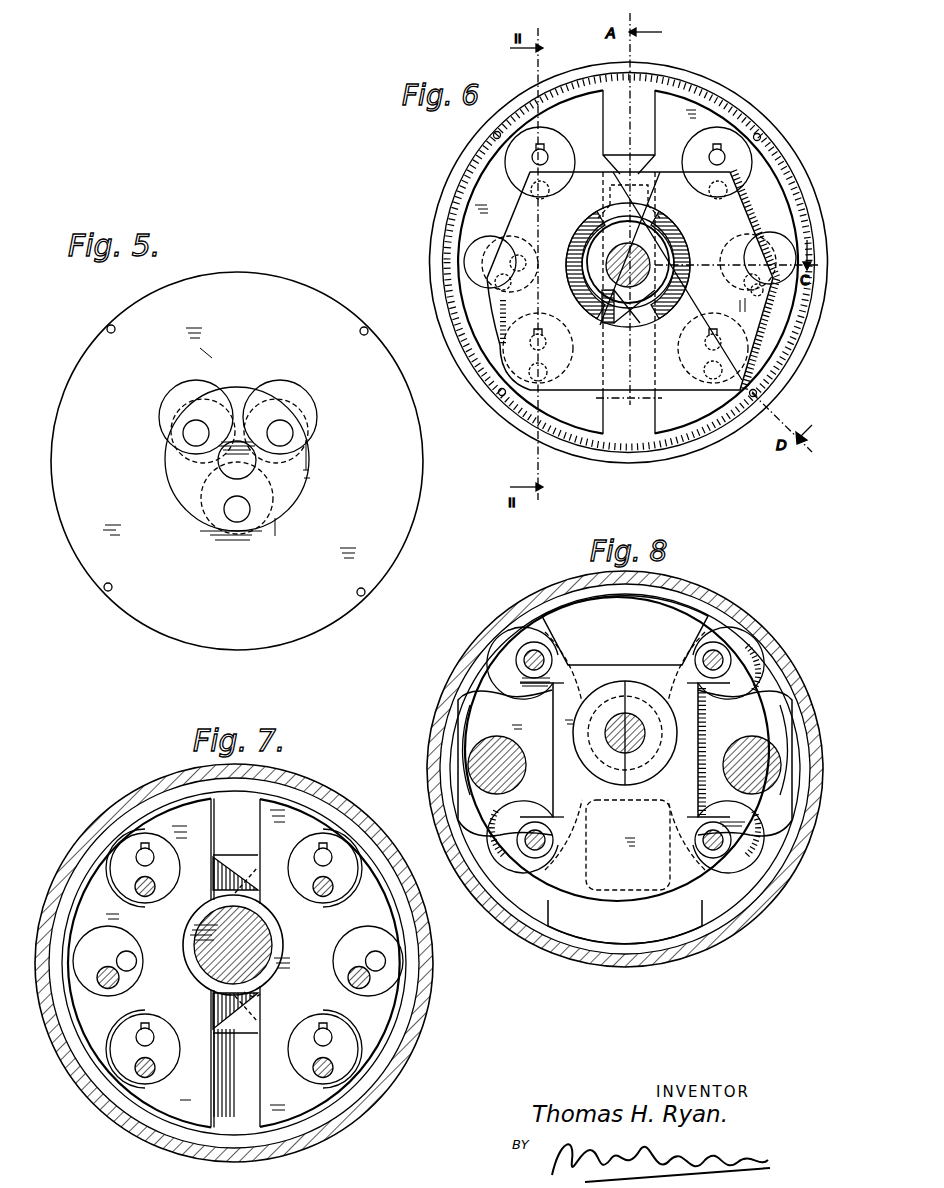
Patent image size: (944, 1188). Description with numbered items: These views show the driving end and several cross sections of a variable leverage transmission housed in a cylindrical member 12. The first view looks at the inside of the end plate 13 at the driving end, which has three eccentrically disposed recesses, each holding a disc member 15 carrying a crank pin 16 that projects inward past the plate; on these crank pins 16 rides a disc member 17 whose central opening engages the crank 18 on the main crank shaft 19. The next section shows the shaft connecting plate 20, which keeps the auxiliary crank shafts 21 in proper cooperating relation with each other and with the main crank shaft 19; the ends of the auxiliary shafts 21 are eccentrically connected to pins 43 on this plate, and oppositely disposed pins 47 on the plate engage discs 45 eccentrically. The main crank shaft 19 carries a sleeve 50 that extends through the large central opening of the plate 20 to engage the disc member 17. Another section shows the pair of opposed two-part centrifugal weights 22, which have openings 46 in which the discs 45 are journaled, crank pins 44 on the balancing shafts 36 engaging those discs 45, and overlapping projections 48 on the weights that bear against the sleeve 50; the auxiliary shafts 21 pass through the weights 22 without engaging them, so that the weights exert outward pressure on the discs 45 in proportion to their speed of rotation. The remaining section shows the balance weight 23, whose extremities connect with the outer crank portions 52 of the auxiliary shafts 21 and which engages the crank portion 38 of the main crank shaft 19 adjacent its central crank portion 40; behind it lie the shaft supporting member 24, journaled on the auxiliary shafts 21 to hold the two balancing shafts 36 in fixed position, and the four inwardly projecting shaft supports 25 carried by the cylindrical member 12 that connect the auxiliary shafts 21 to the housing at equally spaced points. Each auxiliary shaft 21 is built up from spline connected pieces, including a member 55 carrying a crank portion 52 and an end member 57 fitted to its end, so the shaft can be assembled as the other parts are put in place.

In FIG. 6, the cylindrical member 12 is at (747, 108).
In FIG. 7, the cylindrical member 12 is at (343, 798).
In FIG. 8, the cylindrical member 12 is at (755, 621).
In FIG. 5, the end plate 13 is at (315, 305).
In FIG. 5, the disc member 15 is at (273, 383).
In FIG. 5, the crank pin 16 is at (185, 437).
In FIG. 5, the disc member 17 is at (297, 486).
In FIG. 6, the crank 18 is at (625, 252).
In FIG. 7, the main crank shaft 19 is at (283, 939).
In FIG. 6, the shaft connecting plate 20 is at (506, 309).
In FIG. 8, the auxiliary crank shaft 21 is at (535, 891).
In FIG. 6, the centrifugal weight 22 is at (586, 280).
In FIG. 7, the centrifugal weight 22 is at (96, 1047).
In FIG. 6, the balance weight 23 is at (628, 398).
In FIG. 7, the balance weight 23 is at (230, 1093).
In FIG. 8, the balance weight 23 is at (602, 890).
In FIG. 8, the shaft supporting member 24 is at (472, 738).
In FIG. 8, the inwardly projecting shaft support 25 is at (701, 622).
In FIG. 8, the balancing shaft 36 is at (501, 789).
In FIG. 8, the crank portion 38 is at (628, 747).
In FIG. 8, the central crank portion 40 is at (587, 760).
In FIG. 6, the pin 43 is at (710, 190).
In FIG. 7, the pin 43 is at (156, 888).
In FIG. 6, the crank pin 44 is at (518, 254).
In FIG. 7, the crank pin 44 is at (133, 963).
In FIG. 6, the disc 45 is at (482, 248).
In FIG. 7, the disc 45 is at (101, 937).
In FIG. 6, the opening 46 is at (495, 281).
In FIG. 7, the opening 46 is at (154, 897).
In FIG. 6, the pin 47 is at (510, 268).
In FIG. 7, the pin 47 is at (110, 989).
In FIG. 6, the overlapping projection 48 is at (615, 295).
In FIG. 7, the overlapping projection 48 is at (249, 995).
In FIG. 6, the sleeve 50 is at (594, 226).
In FIG. 7, the sleeve 50 is at (268, 976).
In FIG. 8, the outer crank portion 52 is at (540, 657).
In FIG. 8, the member 55 is at (506, 674).
In FIG. 6, the end member 57 is at (512, 171).
In FIG. 7, the end member 57 is at (351, 867).
In FIG. 8, the end member 57 is at (447, 843).